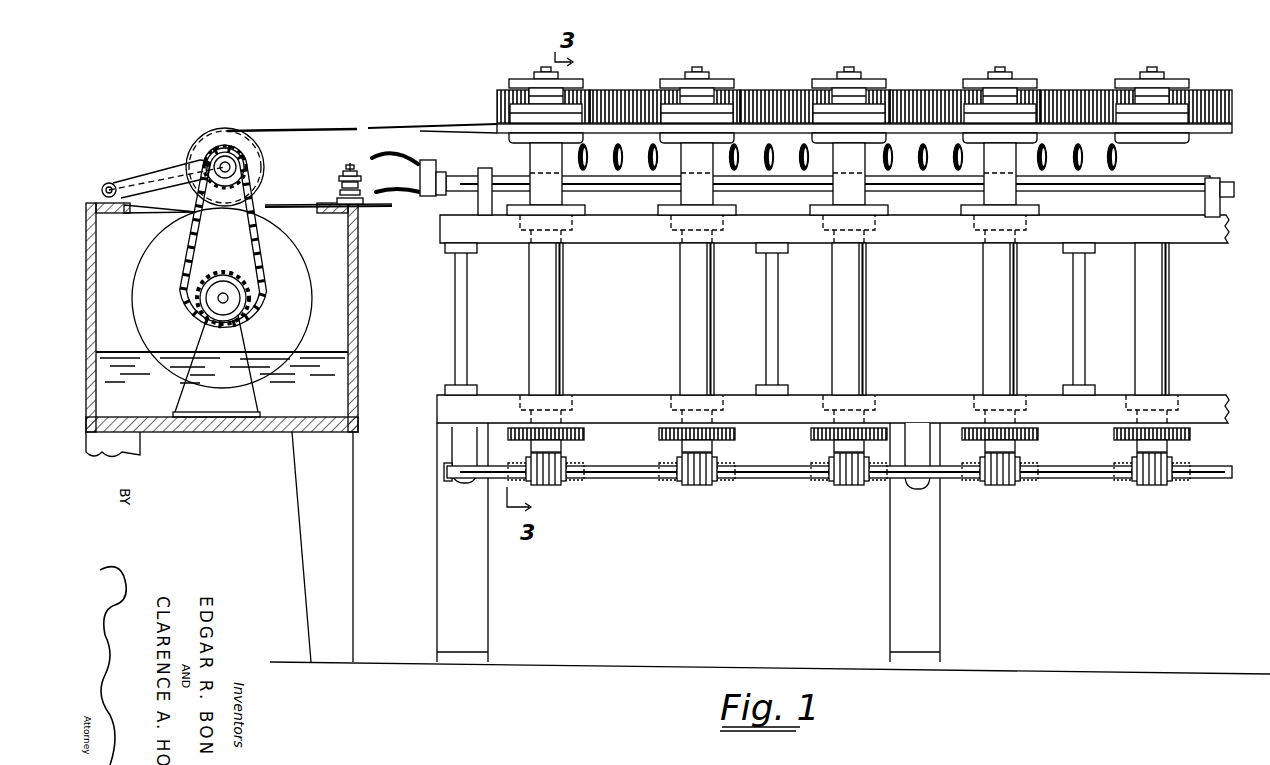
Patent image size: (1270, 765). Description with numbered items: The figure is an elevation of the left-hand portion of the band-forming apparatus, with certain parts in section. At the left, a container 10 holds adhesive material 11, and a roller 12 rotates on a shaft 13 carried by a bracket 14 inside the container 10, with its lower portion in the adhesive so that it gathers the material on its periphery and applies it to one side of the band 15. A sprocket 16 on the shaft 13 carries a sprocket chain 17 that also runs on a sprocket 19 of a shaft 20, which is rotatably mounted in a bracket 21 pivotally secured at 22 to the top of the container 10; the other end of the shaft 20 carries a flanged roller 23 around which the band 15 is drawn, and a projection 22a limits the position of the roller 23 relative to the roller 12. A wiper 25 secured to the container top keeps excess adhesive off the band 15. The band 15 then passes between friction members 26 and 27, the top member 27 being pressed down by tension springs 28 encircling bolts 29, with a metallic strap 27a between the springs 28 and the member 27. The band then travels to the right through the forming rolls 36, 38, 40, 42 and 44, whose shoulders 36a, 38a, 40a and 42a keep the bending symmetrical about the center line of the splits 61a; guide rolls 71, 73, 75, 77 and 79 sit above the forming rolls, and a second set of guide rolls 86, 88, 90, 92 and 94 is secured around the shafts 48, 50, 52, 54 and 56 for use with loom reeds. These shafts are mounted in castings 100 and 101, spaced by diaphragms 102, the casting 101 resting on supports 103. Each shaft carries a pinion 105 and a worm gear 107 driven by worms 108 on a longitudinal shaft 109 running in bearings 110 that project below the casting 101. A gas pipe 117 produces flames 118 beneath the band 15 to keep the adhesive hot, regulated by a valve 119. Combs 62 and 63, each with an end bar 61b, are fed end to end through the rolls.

The container 10 is at (358, 400).
The adhesive material 11 is at (334, 350).
The roller 12 is at (304, 278).
The shaft 13 is at (223, 292).
The bracket 14 is at (262, 402).
The band 15 is at (368, 128).
The sprocket 16 is at (233, 250).
The sprocket chain 17 is at (257, 254).
The sprocket 19 is at (228, 140).
The shaft 20 is at (244, 170).
The bracket 21 is at (176, 171).
The pivot 22 is at (109, 182).
The projection 22a is at (126, 184).
The flanged roller 23 is at (248, 160).
The wiper 25 is at (154, 214).
The friction member 26 is at (366, 208).
The friction member 27 is at (362, 200).
The metallic strap 27a is at (340, 192).
The tension springs 28 is at (342, 176).
The bolts 29 is at (350, 163).
The forming roll 36 is at (512, 141).
The shoulder 36a is at (540, 140).
The forming roll 38 is at (660, 143).
The shoulder 38a is at (690, 140).
The forming roll 40 is at (830, 143).
The shoulder 40a is at (842, 140).
The forming roll 42 is at (997, 142).
The shoulder 42a is at (1006, 148).
The forming roll 44 is at (1162, 140).
The shaft 48 is at (558, 74).
The shaft 50 is at (698, 72).
The shaft 52 is at (844, 72).
The shaft 54 is at (1000, 72).
The shaft 56 is at (1157, 72).
The splits 61a is at (640, 92).
The end bar 61b is at (926, 90).
The comb 62 is at (1230, 104).
The comb 63 is at (496, 98).
The guide roll 71 is at (578, 110).
The guide roll 73 is at (731, 108).
The guide roll 75 is at (882, 106).
The guide roll 77 is at (1034, 106).
The guide roll 79 is at (1188, 106).
The guide roll 86 is at (530, 79).
The guide roll 88 is at (682, 80).
The guide roll 90 is at (836, 80).
The guide roll 92 is at (988, 80).
The guide roll 94 is at (1140, 80).
The casting 100 is at (834, 229).
The casting 101 is at (944, 396).
The diaphragms 102 is at (464, 316).
The supports 103 is at (484, 586).
The pinion 105 is at (582, 428).
The worm gear 107 is at (580, 462).
The worms 108 is at (542, 483).
The shaft 109 is at (616, 482).
The bearings 110 is at (462, 486).
The pipe 117 is at (652, 192).
The flames 118 is at (606, 156).
The valve 119 is at (424, 166).